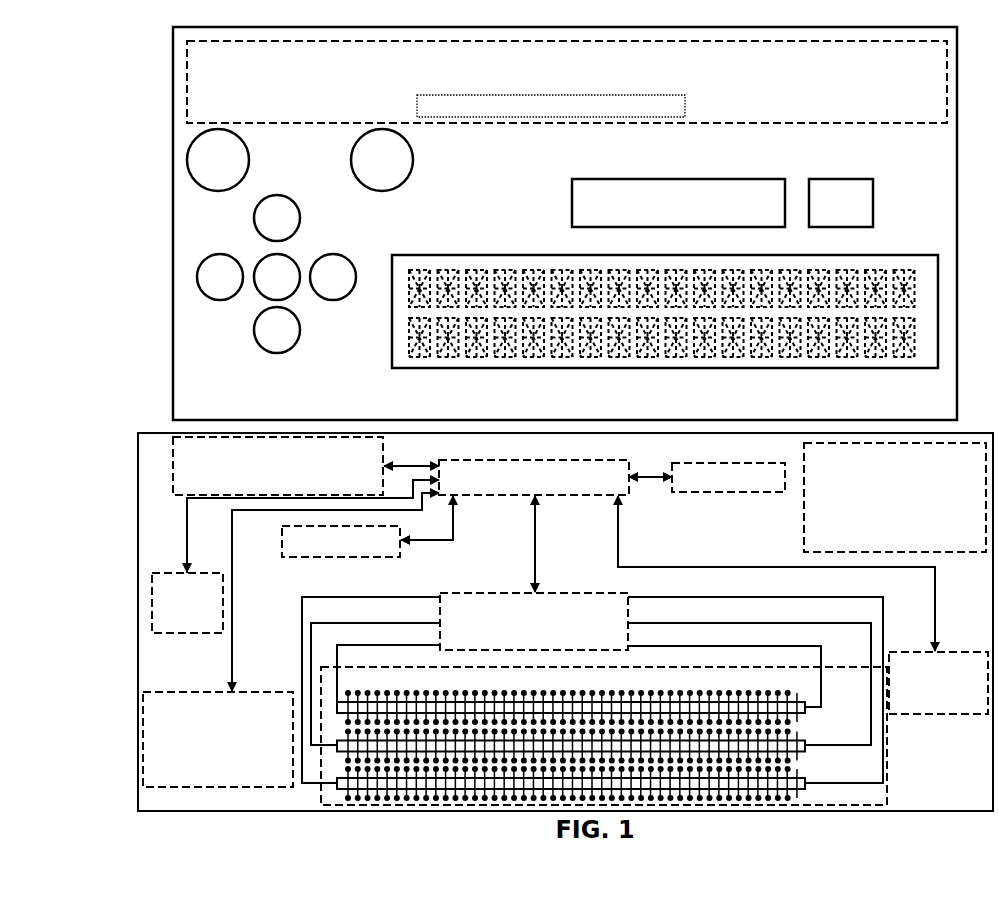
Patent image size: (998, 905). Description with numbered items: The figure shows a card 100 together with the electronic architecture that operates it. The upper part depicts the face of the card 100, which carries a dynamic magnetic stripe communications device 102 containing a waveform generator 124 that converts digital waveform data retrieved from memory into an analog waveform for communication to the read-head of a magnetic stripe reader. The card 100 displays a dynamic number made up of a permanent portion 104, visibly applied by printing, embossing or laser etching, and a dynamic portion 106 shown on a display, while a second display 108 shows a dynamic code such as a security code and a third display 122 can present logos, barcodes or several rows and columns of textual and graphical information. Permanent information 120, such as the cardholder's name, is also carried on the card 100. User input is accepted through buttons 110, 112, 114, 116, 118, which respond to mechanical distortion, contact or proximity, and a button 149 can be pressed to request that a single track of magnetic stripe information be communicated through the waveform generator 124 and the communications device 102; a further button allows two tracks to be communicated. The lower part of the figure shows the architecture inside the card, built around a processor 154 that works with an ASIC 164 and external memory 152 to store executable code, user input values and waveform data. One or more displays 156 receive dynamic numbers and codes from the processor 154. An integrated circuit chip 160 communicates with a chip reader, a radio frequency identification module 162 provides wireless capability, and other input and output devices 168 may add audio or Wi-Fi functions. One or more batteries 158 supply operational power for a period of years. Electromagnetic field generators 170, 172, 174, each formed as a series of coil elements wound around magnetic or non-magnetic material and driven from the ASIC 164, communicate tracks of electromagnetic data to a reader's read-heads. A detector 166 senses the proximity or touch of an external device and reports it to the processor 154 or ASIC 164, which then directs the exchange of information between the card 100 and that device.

The card 100 is at (156, 65).
The dynamic magnetic stripe communications device 102 is at (190, 123).
The permanent portion 104 is at (473, 220).
The dynamic portion 106 is at (620, 227).
The display 108 is at (830, 227).
The button 110 is at (283, 196).
The button 112 is at (233, 298).
The button 114 is at (285, 256).
The button 116 is at (322, 295).
The button 118 is at (282, 352).
The permanent information 120 is at (252, 380).
The third display 122 is at (683, 372).
The waveform generator 124 is at (685, 98).
The button 149 is at (243, 185).
The external memory 152 is at (173, 480).
The processor 154 is at (596, 460).
The display 156 is at (712, 463).
The battery 158 is at (965, 552).
The integrated circuit chip 160 is at (205, 634).
The radio frequency identification module 162 is at (282, 555).
The ASIC 164 is at (490, 593).
The detector 166 is at (235, 787).
The other input and/or output devices 168 is at (965, 714).
The electromagnetic field generator 170 is at (480, 693).
The electromagnetic field generator 172 is at (805, 735).
The electromagnetic field generator 174 is at (805, 773).